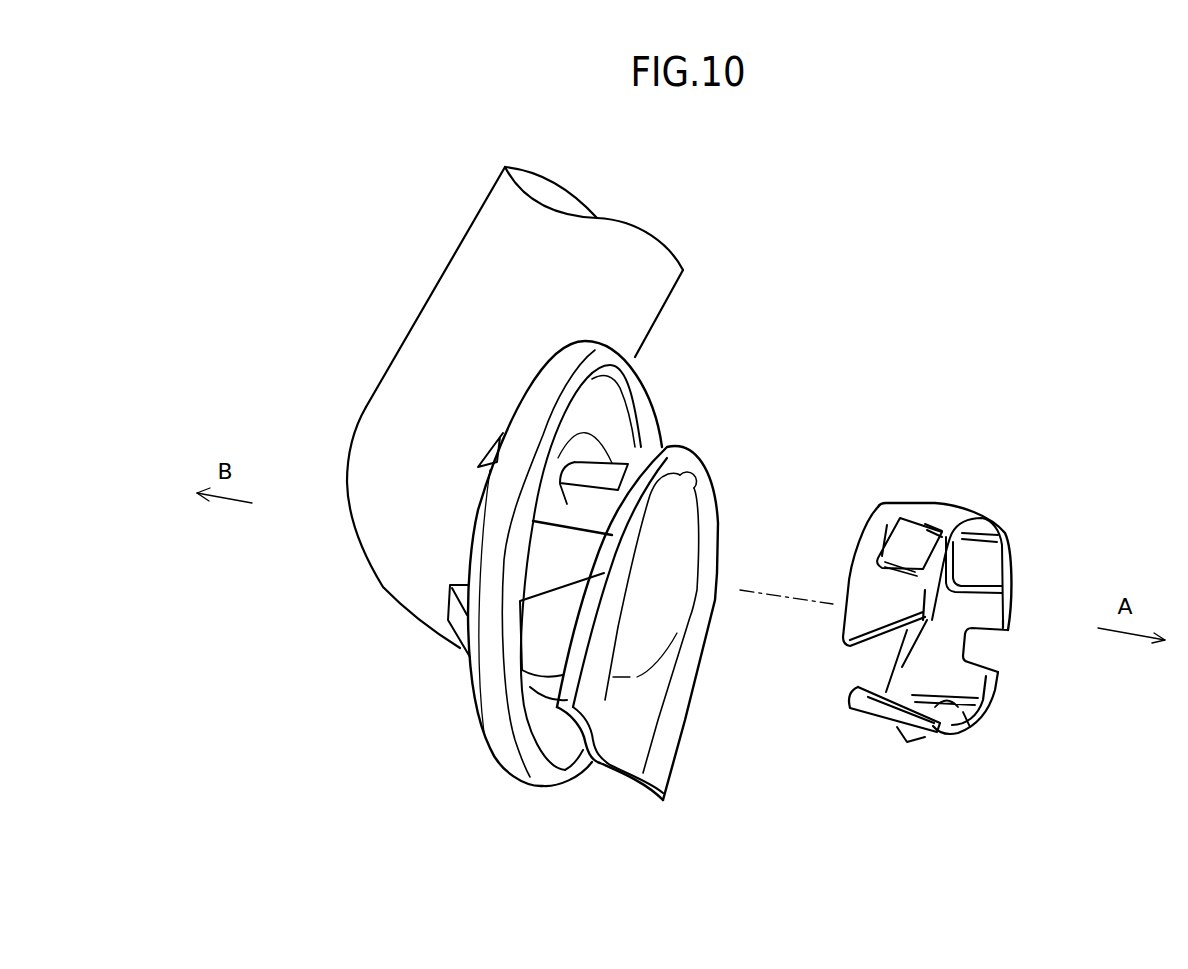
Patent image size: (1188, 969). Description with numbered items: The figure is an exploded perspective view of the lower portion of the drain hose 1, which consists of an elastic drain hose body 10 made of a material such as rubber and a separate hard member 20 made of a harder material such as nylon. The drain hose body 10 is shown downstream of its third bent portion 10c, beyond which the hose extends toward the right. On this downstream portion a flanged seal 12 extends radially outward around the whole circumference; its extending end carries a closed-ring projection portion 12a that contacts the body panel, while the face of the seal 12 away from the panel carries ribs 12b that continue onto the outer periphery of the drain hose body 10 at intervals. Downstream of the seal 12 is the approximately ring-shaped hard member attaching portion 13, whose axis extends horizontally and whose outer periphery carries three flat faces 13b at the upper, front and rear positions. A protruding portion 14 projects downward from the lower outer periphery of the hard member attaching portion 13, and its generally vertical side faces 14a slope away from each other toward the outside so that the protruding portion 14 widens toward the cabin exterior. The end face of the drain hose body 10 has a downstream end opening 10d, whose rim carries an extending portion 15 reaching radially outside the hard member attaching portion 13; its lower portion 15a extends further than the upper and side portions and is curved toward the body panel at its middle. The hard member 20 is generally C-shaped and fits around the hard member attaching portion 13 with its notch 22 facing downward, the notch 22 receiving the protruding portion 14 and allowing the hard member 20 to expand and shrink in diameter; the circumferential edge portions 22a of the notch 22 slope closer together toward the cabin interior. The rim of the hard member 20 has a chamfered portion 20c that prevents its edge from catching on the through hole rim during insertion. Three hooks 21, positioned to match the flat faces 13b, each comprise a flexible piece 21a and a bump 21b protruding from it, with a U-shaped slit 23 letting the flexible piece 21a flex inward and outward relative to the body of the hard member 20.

The drain hose 1 is at (471, 372).
The drain hose body 10 is at (471, 407).
The third bent portion 10c is at (365, 557).
The downstream end opening 10d is at (700, 488).
The seal 12 is at (520, 538).
The projection portion 12a is at (640, 370).
The ribs 12b is at (493, 447).
The hard member attaching portion 13 is at (496, 462).
The flat faces 13b is at (570, 505).
The protruding portion 14 is at (595, 605).
The side faces 14a is at (557, 580).
The extending portion 15 is at (681, 634).
The lower portion 15a is at (617, 780).
The hard member 20 is at (929, 620).
The chamfered portion 20c is at (922, 585).
The hooks 21 is at (929, 620).
The flexible piece 21a is at (980, 513).
The bump 21b is at (893, 505).
The notch 22 is at (870, 660).
The circumferential edge portions 22a is at (870, 660).
The slit 23 is at (880, 530).